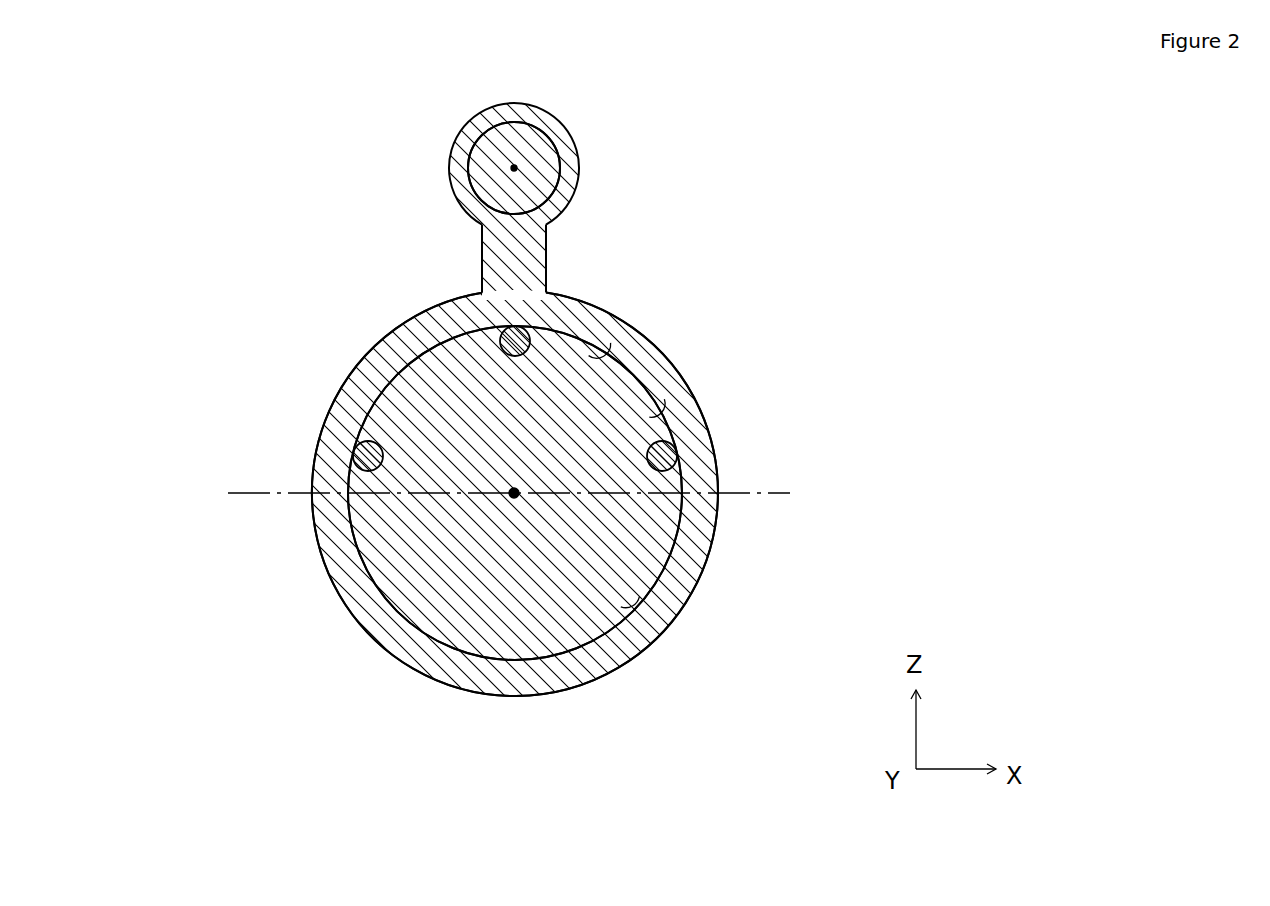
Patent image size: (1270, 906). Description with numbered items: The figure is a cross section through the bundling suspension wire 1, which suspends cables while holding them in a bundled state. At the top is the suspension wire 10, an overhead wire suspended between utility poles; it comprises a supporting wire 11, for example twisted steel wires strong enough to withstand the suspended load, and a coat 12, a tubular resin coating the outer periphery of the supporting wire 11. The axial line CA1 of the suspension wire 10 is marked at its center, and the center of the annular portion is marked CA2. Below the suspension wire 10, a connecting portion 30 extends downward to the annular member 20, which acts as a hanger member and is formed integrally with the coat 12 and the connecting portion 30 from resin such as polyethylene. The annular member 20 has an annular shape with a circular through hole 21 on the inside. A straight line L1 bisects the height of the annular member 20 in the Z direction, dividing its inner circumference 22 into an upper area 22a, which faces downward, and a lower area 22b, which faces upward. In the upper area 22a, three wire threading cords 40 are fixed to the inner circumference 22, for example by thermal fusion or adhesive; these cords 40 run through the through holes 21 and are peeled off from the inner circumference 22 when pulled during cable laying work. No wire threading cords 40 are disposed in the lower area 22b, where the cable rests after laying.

The bundling suspension wire 1 is at (722, 141).
The suspension wire 10 is at (549, 101).
The supporting wire 11 is at (498, 140).
The coat 12 is at (580, 154).
The annular member 20 is at (672, 355).
The through hole 21 is at (645, 393).
The inner circumference 22 is at (386, 398).
The upper area 22a is at (590, 343).
The lower area 22b is at (628, 610).
The connecting portion 30 is at (547, 256).
The wire threading cord 40 is at (501, 335).
The axis of the suspension wire CA1 is at (514, 168).
The center axis of large annular portion CA2 is at (514, 493).
The straight line L1 is at (530, 494).